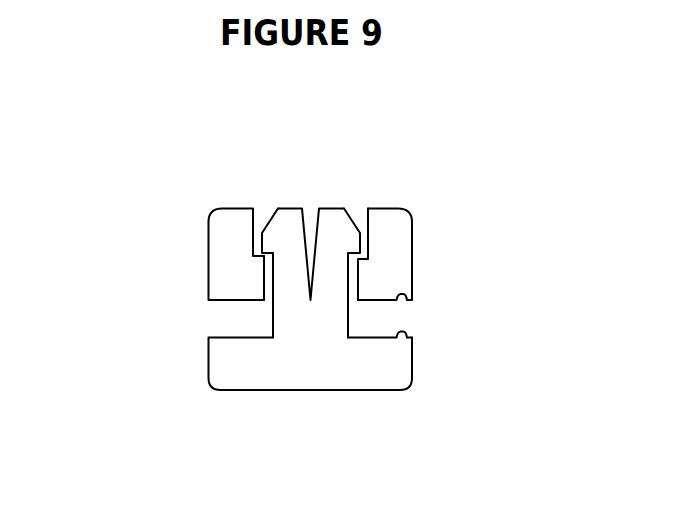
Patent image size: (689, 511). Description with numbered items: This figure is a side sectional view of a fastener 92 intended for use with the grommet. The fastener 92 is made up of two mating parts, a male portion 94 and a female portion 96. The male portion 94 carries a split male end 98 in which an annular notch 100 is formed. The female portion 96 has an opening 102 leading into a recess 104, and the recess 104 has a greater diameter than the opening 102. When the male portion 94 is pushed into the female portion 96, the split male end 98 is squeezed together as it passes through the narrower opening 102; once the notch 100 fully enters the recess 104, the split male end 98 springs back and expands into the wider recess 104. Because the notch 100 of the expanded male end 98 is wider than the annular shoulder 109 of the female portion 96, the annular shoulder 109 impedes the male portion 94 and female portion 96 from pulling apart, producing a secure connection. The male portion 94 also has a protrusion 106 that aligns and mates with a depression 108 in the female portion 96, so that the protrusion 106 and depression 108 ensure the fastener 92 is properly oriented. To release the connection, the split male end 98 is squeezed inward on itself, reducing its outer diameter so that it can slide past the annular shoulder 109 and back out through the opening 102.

The fastener 92 is at (160, 199).
The male portion 94 is at (294, 370).
The female portion 96 is at (210, 255).
The split male end 98 is at (337, 218).
The annular notch 100 is at (270, 245).
The opening 102 is at (256, 295).
The recess 104 is at (363, 225).
The protrusion 106 is at (412, 335).
The depression 108 is at (417, 288).
The annular shoulder 109 is at (374, 253).